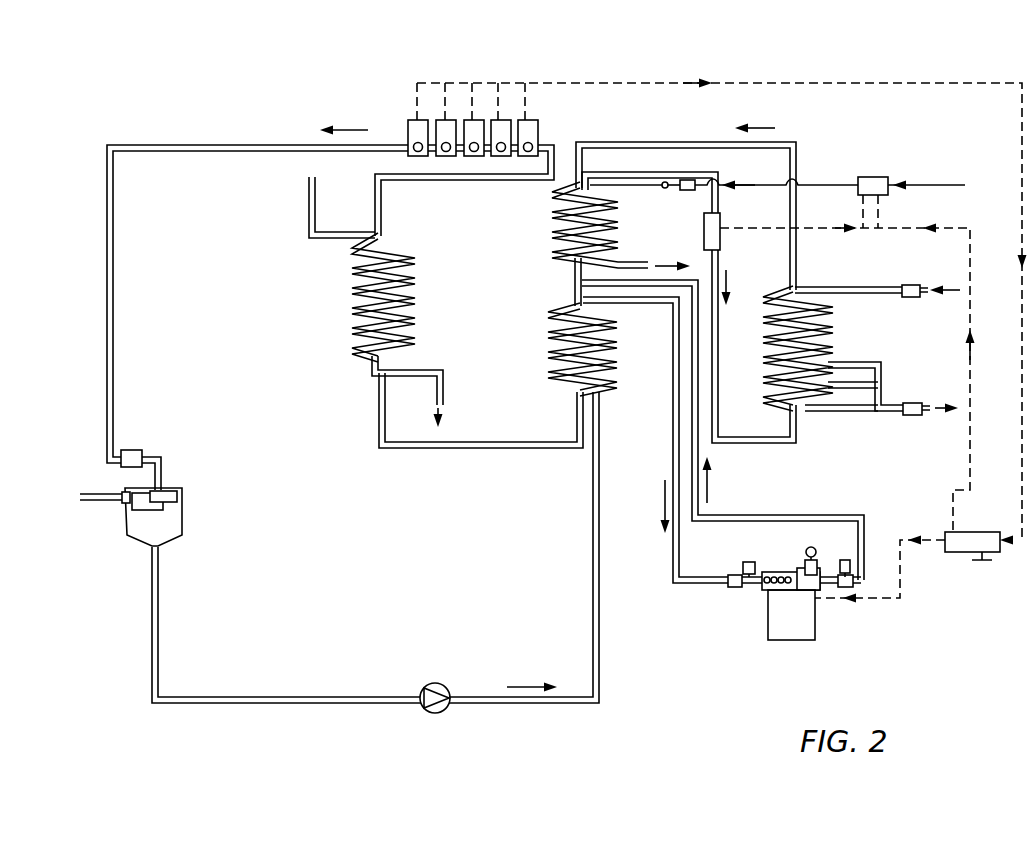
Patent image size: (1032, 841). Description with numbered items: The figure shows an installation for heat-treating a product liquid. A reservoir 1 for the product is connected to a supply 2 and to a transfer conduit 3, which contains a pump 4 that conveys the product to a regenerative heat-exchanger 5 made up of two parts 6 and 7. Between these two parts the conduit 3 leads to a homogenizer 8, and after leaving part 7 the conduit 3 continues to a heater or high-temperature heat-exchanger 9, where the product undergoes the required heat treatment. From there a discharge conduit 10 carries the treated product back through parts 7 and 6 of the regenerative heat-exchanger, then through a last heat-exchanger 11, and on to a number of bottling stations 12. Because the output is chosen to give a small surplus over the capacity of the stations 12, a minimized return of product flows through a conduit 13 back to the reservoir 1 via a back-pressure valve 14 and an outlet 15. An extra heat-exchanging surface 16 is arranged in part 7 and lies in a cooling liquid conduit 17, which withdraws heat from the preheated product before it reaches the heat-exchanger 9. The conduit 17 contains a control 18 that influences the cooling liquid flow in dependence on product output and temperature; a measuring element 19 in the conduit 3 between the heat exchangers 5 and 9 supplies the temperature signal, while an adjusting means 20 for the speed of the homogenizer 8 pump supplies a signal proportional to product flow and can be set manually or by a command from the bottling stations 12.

The reservoir 1 is at (135, 527).
The supply 2 is at (93, 494).
The transfer conduit 3 is at (722, 352).
The pump 4 is at (445, 687).
The regenerative heat-exchanger 5 is at (546, 306).
The part of regenerative heat-exchanger 6 is at (548, 362).
The part of regenerative heat-exchanger 7 is at (552, 232).
The homogenizer 8 is at (768, 612).
The HT heat-exchanger 9 is at (822, 342).
The discharge conduit 10 is at (664, 143).
The last heat-exchanger 11 is at (416, 300).
The bottling stations 12 is at (500, 120).
The return conduit 13 is at (228, 147).
The back-pressure valve 14 is at (131, 450).
The outlet 15 is at (160, 470).
The extra heat-exchanging surface 16 is at (622, 240).
The cooling liquid conduit 17 is at (948, 184).
The control 18 is at (873, 177).
The measuring element 19 is at (722, 240).
The adjusting means 20 is at (957, 549).